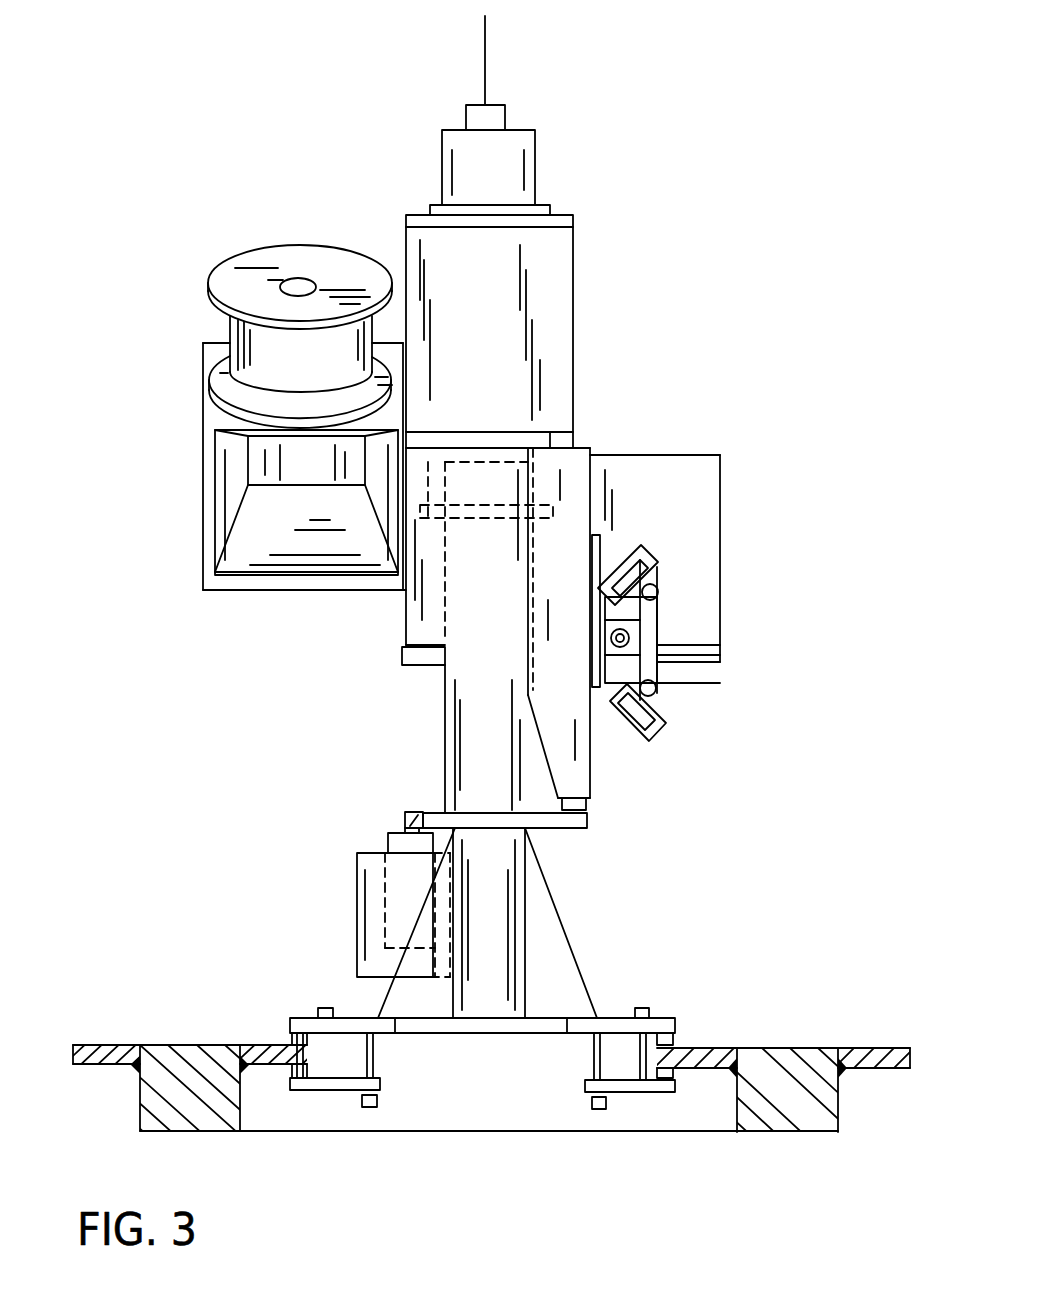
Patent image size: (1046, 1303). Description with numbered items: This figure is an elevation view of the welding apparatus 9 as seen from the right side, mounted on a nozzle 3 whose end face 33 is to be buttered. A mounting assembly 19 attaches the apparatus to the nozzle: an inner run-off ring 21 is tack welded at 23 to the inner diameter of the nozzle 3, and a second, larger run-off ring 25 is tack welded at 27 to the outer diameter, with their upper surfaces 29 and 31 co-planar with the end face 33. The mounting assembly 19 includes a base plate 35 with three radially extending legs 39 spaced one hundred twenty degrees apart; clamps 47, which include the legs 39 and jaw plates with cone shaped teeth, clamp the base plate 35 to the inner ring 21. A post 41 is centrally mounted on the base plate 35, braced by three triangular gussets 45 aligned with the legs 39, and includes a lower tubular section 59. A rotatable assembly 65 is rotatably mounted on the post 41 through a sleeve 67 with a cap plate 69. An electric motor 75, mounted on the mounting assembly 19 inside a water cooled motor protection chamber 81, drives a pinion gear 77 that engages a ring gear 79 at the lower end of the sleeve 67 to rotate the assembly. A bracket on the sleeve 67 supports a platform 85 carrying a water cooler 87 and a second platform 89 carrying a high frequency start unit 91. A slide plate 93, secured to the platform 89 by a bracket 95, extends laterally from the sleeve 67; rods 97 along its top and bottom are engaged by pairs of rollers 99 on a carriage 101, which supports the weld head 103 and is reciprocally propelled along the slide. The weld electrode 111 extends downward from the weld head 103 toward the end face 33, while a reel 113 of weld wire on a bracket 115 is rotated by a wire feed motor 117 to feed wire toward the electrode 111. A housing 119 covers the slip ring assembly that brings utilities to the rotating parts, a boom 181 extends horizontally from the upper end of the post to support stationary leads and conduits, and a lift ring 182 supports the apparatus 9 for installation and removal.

The nozzle 3 is at (770, 1072).
The welding apparatus 9 is at (695, 378).
The mounting assembly 19 is at (600, 950).
The inner run-off ring 21 is at (265, 1045).
The tack weld 23 is at (242, 1067).
The second run-off ring 25 is at (102, 1045).
The tack weld 27 is at (137, 1067).
The upper surface of inner ring 29 is at (707, 1048).
The upper surface of second ring 31 is at (877, 1048).
The end face 33 is at (818, 1048).
The base plate 35 is at (430, 1042).
The legs 39 is at (372, 1018).
The post 41 is at (538, 887).
The triangular gussets 45 is at (565, 1005).
The clamps 47 is at (662, 1005).
The lower tubular section 59 is at (508, 937).
The rotatable assembly 65 is at (385, 683).
The sleeve 67 is at (455, 727).
The cap plate 69 is at (435, 452).
The electric motor 75 is at (390, 838).
The pinion gear 77 is at (410, 818).
The ring gear 79 is at (423, 813).
The motor protection chamber 81 is at (370, 908).
The platform 85 is at (400, 657).
The water cooler 87 is at (405, 622).
The second platform 89 is at (712, 664).
The high frequency start unit 91 is at (650, 465).
The slide plate 93 is at (655, 627).
The bracket 95 is at (620, 638).
The rods 97 is at (665, 606).
The rollers 99 is at (662, 602).
The carriage 101 is at (617, 578).
The weld head 103 is at (552, 596).
The weld electrode 111 is at (590, 810).
The reel 113 is at (250, 268).
The bracket 115 is at (210, 453).
The wire feed motor 117 is at (283, 550).
The housing 119 is at (548, 298).
The boom 181 is at (495, 120).
The lift ring 182 is at (487, 20).